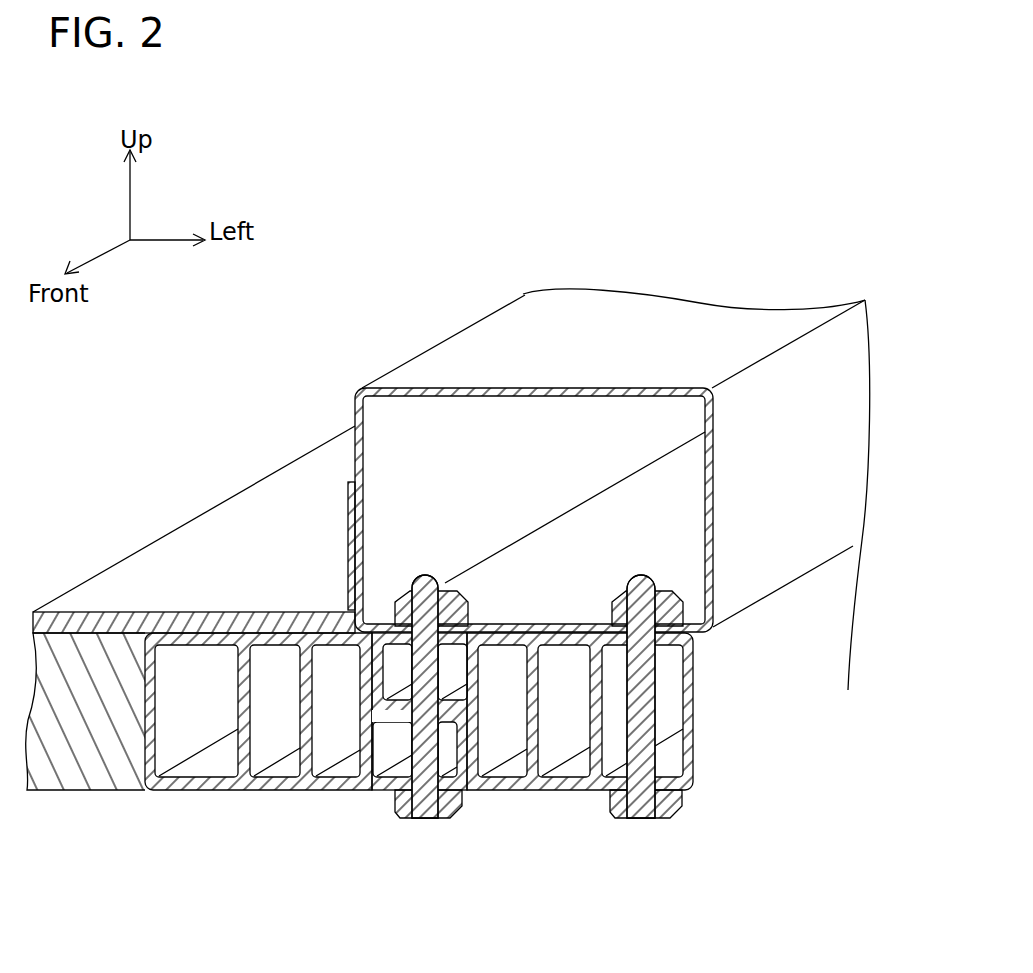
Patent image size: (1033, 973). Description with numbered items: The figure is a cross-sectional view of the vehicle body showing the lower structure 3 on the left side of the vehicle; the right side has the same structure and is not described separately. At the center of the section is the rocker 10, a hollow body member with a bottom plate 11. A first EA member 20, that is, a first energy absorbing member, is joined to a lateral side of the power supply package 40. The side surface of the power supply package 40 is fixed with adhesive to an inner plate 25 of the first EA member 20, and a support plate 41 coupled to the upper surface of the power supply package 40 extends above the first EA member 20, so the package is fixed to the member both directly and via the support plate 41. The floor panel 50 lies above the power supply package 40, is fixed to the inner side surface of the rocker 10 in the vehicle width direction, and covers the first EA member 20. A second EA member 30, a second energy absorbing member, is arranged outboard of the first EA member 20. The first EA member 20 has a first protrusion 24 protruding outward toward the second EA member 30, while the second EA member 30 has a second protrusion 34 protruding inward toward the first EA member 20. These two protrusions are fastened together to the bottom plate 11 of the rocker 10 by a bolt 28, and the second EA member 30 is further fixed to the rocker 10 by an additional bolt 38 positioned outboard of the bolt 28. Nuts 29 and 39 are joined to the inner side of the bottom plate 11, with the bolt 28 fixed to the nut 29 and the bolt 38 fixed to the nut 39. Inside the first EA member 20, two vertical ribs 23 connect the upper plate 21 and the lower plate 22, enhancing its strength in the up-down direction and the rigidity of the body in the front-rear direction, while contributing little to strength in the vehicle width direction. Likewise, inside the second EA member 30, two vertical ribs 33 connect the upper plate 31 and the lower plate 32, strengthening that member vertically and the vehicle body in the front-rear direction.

The lower structure 3 is at (266, 360).
The rocker 10 is at (604, 265).
The bottom plate 11 is at (537, 562).
The first EA member 20 is at (246, 686).
The upper plate 21 is at (217, 636).
The lower plate 22 is at (210, 790).
The vertical ribs 23 is at (263, 757).
The first protrusion 24 is at (468, 787).
The inner plate 25 is at (150, 750).
The bolt 28 is at (425, 820).
The nut 29 is at (445, 577).
The second EA member 30 is at (580, 783).
The upper plate 31 is at (493, 645).
The lower plate 32 is at (535, 760).
The vertical ribs 33 is at (596, 757).
The second protrusion 34 is at (377, 690).
The bolt 38 is at (655, 818).
The nut 39 is at (683, 606).
The power supply package 40 is at (62, 792).
The support plate 41 is at (112, 622).
The floor panel 50 is at (265, 492).